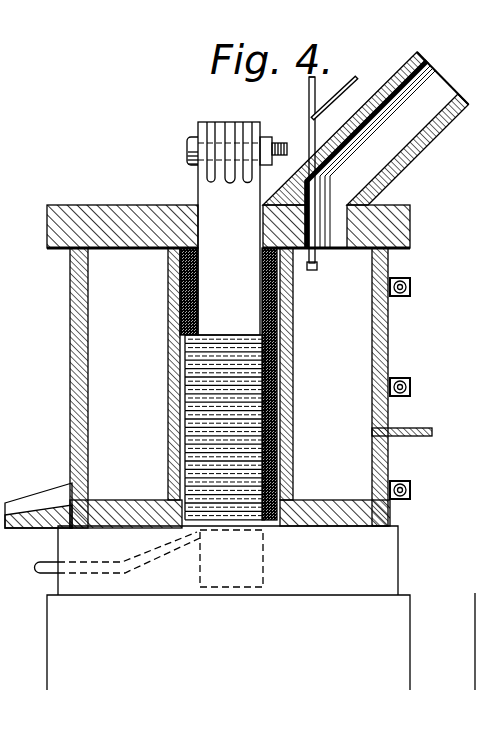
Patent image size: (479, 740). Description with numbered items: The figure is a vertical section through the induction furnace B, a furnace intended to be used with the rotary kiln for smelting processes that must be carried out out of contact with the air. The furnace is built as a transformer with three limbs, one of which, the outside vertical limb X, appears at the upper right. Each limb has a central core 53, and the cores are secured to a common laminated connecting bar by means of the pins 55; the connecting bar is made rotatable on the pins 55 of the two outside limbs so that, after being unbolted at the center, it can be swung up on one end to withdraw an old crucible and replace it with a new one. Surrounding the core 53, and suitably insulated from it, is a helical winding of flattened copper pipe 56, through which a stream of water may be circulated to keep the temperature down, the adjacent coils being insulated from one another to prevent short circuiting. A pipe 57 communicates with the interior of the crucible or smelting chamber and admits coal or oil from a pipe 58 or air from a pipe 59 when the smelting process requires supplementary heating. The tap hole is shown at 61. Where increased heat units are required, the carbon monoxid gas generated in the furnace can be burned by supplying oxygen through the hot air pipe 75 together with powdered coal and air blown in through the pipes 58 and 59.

The central core 53 is at (212, 196).
The pins 55 is at (190, 136).
The flattened copper pipe 56 is at (285, 308).
The pipe 57 is at (309, 128).
The pipe 58 is at (309, 92).
The pipe 59 is at (336, 101).
The tap hole 61 is at (70, 503).
The hot air pipe 75 is at (420, 437).
The induction furnace B is at (15, 384).
The limb X is at (371, 150).